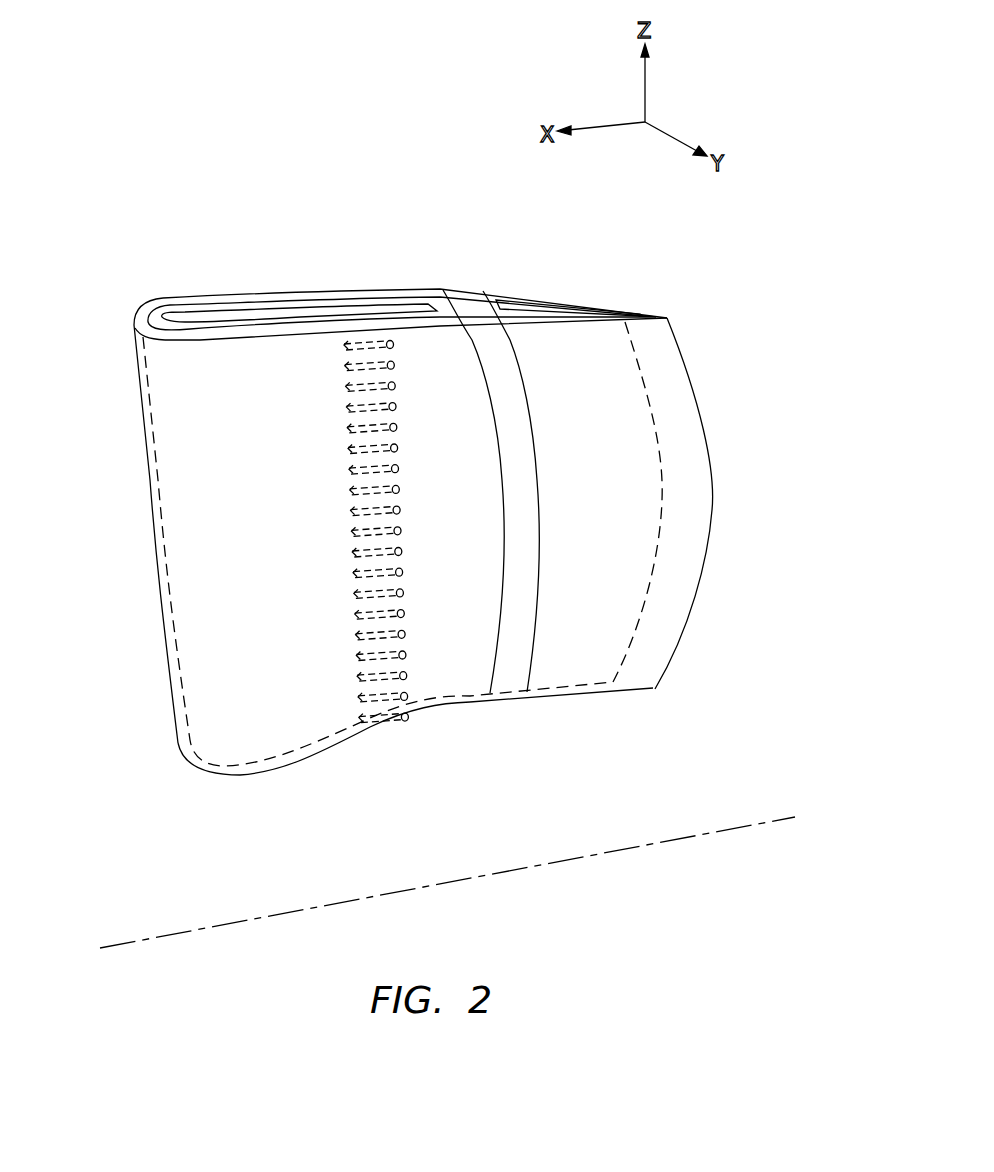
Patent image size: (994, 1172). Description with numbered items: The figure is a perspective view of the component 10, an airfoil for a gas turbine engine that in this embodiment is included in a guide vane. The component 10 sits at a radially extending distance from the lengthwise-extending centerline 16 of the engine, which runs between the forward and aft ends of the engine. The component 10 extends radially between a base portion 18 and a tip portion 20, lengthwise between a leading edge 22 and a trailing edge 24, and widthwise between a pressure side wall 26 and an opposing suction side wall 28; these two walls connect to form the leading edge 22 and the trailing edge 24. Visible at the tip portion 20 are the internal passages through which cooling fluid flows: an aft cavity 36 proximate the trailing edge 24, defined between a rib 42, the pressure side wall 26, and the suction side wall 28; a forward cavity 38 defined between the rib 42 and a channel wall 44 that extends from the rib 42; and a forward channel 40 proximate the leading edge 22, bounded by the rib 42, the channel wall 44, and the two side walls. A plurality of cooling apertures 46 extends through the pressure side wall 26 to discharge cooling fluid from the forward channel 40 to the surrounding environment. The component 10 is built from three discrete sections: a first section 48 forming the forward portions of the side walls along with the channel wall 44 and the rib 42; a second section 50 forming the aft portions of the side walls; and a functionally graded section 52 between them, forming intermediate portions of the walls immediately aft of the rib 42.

The component 10 is at (150, 196).
The centerline 16 is at (775, 812).
The base portion 18 is at (570, 692).
The tip portion 20 is at (450, 420).
The leading edge 22 is at (147, 503).
The trailing edge 24 is at (713, 510).
The pressure side wall 26 is at (223, 533).
The suction side wall 28 is at (260, 288).
The aft cavity 36 is at (540, 312).
The forward cavity 38 is at (308, 308).
The forward channel 40 is at (137, 309).
The rib 42 is at (454, 308).
The channel wall 44 is at (253, 284).
The cooling apertures 46 is at (402, 700).
The first section 48 is at (433, 284).
The second section 50 is at (674, 308).
The functionally graded section 52 is at (486, 283).